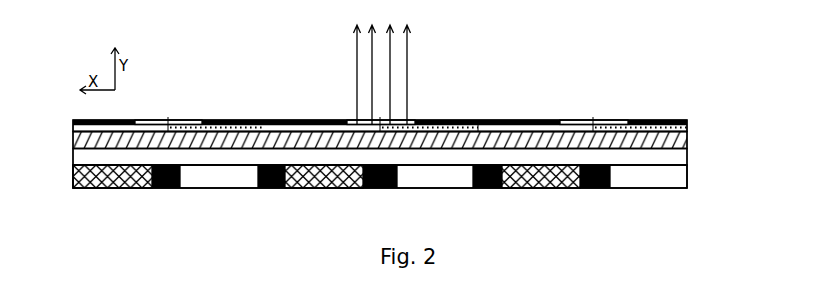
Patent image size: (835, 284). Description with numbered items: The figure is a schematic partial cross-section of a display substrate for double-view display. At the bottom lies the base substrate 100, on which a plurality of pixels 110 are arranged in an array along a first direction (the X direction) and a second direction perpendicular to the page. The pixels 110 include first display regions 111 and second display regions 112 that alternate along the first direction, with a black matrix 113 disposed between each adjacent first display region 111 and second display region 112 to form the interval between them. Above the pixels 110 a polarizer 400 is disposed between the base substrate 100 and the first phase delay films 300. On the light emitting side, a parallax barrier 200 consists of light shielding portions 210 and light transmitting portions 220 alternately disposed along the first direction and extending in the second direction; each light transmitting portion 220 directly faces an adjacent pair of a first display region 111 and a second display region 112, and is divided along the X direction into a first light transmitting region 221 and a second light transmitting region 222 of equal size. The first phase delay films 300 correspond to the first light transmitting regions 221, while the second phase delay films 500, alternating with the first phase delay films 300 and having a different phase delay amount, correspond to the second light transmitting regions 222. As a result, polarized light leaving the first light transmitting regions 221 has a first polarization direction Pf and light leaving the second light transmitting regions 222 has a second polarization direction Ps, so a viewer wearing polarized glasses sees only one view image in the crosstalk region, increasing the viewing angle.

The base substrate 100 is at (657, 157).
The pixels 110 is at (750, 190).
The first display regions 111 is at (655, 183).
The second display regions 112 is at (552, 188).
The black matrix 113 is at (492, 187).
The parallax barrier 200 is at (750, 93).
The light shielding portions 210 is at (672, 128).
The light transmitting portions 220 is at (593, 122).
The first light transmitting region 221 is at (390, 122).
The second light transmitting region 222 is at (362, 121).
The first phase delay films 300 is at (687, 135).
The polarizer 400 is at (665, 148).
The second phase delay films 500 is at (76, 131).
The second polarization direction Ps is at (371, 71).
The first polarization direction Pf is at (390, 71).